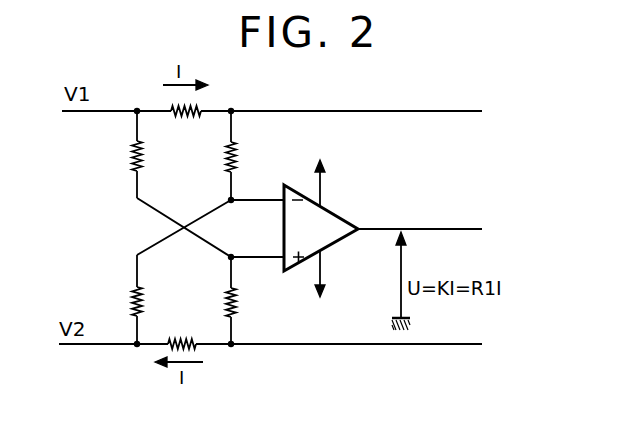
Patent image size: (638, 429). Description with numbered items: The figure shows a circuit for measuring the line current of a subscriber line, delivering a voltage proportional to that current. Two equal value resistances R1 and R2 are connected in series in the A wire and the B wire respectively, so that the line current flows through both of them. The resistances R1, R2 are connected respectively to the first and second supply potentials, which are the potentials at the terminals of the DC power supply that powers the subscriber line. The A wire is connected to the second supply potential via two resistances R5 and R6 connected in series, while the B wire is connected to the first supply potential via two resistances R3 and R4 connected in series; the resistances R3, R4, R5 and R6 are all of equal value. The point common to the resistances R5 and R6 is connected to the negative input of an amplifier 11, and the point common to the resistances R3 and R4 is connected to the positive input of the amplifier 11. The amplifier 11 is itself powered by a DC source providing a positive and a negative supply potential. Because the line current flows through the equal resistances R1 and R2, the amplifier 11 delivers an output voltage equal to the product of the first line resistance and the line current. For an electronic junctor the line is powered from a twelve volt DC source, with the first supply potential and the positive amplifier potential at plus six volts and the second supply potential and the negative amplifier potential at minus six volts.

The resistance R1 is at (187, 117).
The resistance R2 is at (188, 336).
The resistance R3 is at (135, 159).
The resistance R4 is at (236, 302).
The resistance R5 is at (236, 158).
The resistance R6 is at (131, 300).
The amplifier 11 is at (332, 223).
The A wire A is at (376, 111).
The B wire B is at (420, 347).